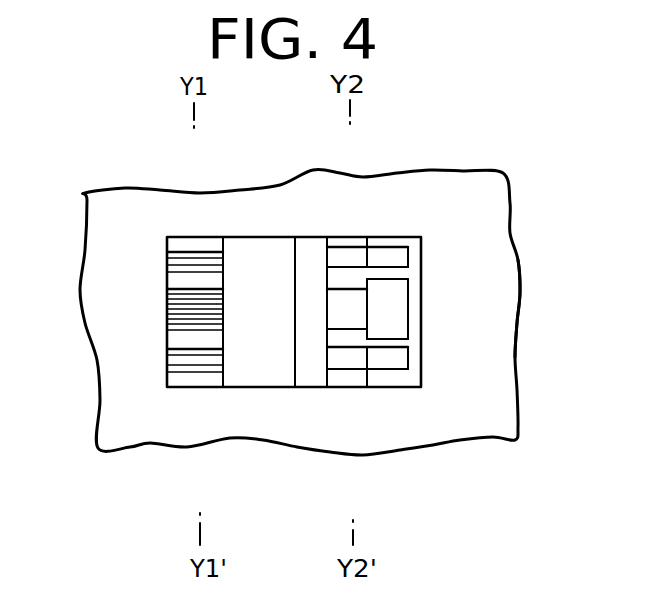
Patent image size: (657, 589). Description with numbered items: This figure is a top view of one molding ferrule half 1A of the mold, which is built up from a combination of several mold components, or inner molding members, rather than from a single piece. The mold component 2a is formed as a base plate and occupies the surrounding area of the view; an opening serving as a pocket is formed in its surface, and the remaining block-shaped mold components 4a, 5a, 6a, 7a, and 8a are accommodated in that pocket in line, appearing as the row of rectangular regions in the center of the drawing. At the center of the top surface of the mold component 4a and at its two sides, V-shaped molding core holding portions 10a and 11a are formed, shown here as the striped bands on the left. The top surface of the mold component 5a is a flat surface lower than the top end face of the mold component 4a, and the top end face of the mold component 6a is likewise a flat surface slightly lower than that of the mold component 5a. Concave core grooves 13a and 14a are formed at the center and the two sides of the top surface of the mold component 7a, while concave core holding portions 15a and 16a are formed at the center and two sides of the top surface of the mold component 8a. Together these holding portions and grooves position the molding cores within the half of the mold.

The molding ferrule half 1A is at (511, 206).
The mold component (base plate) 2a is at (493, 327).
The mold component (block) 4a is at (235, 247).
The mold component (block) 5a is at (247, 388).
The mold component (block) 6a is at (325, 388).
The mold component (block) 7a is at (352, 388).
The mold component (block) 8a is at (410, 388).
The V-shaped molding core holding portion 10a is at (177, 292).
The V-shaped molding core holding portion 11a is at (177, 257).
The concave core groove 13a is at (340, 314).
The concave core groove 14a is at (345, 255).
The concave core holding portion 15a is at (397, 300).
The concave core holding portion 16a is at (387, 257).